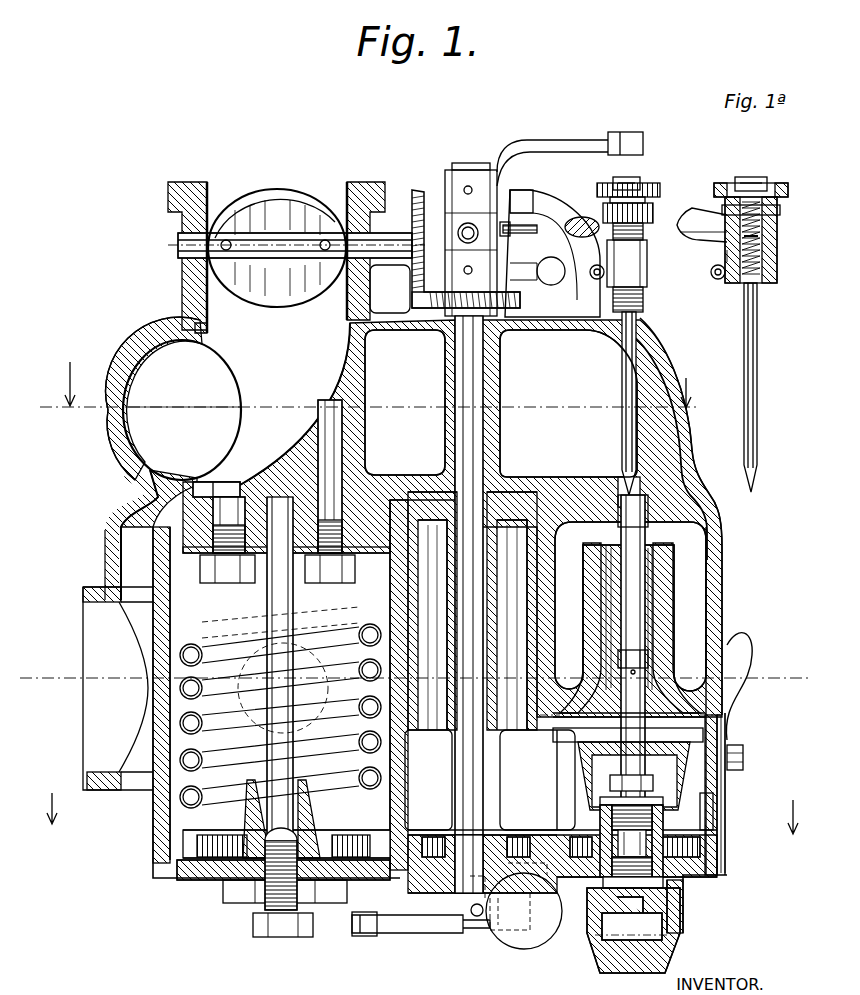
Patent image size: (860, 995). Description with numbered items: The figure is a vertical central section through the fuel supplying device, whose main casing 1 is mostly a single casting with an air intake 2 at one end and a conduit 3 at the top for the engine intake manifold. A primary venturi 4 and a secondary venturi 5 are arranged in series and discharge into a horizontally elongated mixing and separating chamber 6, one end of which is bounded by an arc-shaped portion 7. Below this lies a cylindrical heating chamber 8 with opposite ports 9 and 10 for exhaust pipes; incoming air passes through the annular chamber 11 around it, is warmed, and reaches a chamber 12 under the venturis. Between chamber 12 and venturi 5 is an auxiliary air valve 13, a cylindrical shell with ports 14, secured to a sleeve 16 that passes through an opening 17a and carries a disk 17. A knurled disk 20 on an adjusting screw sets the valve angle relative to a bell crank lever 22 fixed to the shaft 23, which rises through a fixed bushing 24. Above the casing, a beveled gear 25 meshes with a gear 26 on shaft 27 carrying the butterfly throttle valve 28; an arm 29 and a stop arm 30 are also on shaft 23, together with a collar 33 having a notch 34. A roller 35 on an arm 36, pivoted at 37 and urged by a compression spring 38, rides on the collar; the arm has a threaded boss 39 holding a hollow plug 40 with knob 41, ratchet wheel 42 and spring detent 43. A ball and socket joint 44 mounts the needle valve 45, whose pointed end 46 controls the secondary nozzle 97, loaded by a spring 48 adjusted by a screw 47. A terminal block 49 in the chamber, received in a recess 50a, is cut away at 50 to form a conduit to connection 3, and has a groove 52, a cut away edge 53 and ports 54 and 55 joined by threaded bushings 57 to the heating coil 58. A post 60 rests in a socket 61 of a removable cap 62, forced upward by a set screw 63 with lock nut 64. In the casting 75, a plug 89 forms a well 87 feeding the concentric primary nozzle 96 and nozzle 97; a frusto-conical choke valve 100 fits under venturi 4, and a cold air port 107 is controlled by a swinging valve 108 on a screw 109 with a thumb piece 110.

In FIG. 1, the main casing 1 is at (722, 604).
In FIG. 1, the air intake 2 is at (100, 632).
In FIG. 1, the conduit or connection 3 is at (212, 196).
In FIG. 1, the primary venturi 4 is at (648, 618).
In FIG. 1, the secondary venturi 5 is at (600, 482).
In FIG. 1, the mixing and separating chamber 6 is at (331, 401).
In FIG. 1, the arc-shaped portion 7 is at (182, 407).
In FIG. 1, the heating chamber 8 is at (150, 718).
In FIG. 1, the port 9 is at (694, 811).
In FIG. 1, the port 10 is at (414, 681).
In FIG. 1, the annular chamber 11 is at (140, 812).
In FIG. 1, the chamber 12 is at (582, 805).
In FIG. 1, the auxiliary air valve 13 is at (537, 780).
In FIG. 1, the ports 14 is at (545, 572).
In FIG. 1, the tubular shaft or sleeve 16 is at (458, 760).
In FIG. 1, the disk 17 is at (450, 790).
In FIG. 1, the opening 17a is at (598, 830).
In FIG. 1, the knurled disk 20 is at (522, 945).
In FIG. 1, the bell crank lever 22 is at (413, 940).
In FIG. 1, the shaft 23 is at (480, 365).
In FIG. 1, the fixed sleeve or bushing 24 is at (508, 407).
In FIG. 1, the beveled gear 25 is at (412, 298).
In FIG. 1, the beveled gear 26 is at (418, 190).
In FIG. 1, the shaft 27 is at (178, 250).
In FIG. 1, the butterfly throttle valve 28 is at (282, 200).
In FIG. 1, the lever or arm 29 is at (575, 140).
In FIG. 1, the stop arm 30 is at (551, 285).
In FIG. 1, the collar 33 is at (466, 214).
In FIG. 1, the notch or depression 34 is at (523, 235).
In FIG. 1, the roller 35 is at (537, 231).
In FIG. 1, the arm 36 is at (552, 195).
In FIG. 1A, the arm 36 is at (692, 208).
In FIG. 1, the pivot 37 is at (595, 280).
In FIG. 1A, the pivot 37 is at (718, 280).
In FIG. 1, the compression spring 38 is at (643, 300).
In FIG. 1, the hollow threaded boss 39 is at (647, 268).
In FIG. 1A, the hollow threaded boss 39 is at (777, 262).
In FIG. 1, the hollow plug 40 is at (645, 236).
In FIG. 1A, the hollow plug 40 is at (770, 238).
In FIG. 1, the knurled disk or knob 41 is at (640, 183).
In FIG. 1A, the knurled disk or knob 41 is at (778, 184).
In FIG. 1, the ratchet wheel 42 is at (655, 210).
In FIG. 1A, the ratchet wheel 42 is at (780, 212).
In FIG. 1, the spring detent 43 is at (590, 217).
In FIG. 1A, the spring detent 43 is at (695, 240).
In FIG. 1A, the ball and socket joint 44 is at (730, 262).
In FIG. 1, the needle valve 45 is at (622, 375).
In FIG. 1A, the needle valve 45 is at (758, 340).
In FIG. 1, the pointed end 46 is at (632, 488).
In FIG. 1, the screw 47 is at (624, 177).
In FIG. 1A, the screw 47 is at (752, 177).
In FIG. 1A, the compression spring 48 is at (775, 230).
In FIG. 1, the terminal block 49 is at (366, 377).
In FIG. 1, the cut away portion 50 is at (283, 387).
In FIG. 1, the recess 50a is at (405, 402).
In FIG. 1, the groove 52 is at (366, 467).
In FIG. 1, the cut away edge 53 is at (215, 488).
In FIG. 1, the port 54 is at (240, 482).
In FIG. 1, the port 55 is at (328, 400).
In FIG. 1, the threaded bushings 57 is at (200, 572).
In FIG. 1, the heating coil 58 is at (212, 610).
In FIG. 1, the post 60 is at (215, 605).
In FIG. 1, the socket 61 is at (250, 790).
In FIG. 1, the removable cap or cover 62 is at (195, 880).
In FIG. 1, the set screw 63 is at (287, 937).
In FIG. 1, the lock nut 64 is at (243, 903).
In FIG. 1, the casting 75 is at (703, 880).
In FIG. 1, the well 87 is at (605, 935).
In FIG. 1, the screw threaded plug 89 is at (682, 950).
In FIG. 1, the primary nozzle 96 is at (618, 662).
In FIG. 1, the secondary nozzle 97 is at (648, 530).
In FIG. 1, the choke valve 100 is at (578, 790).
In FIG. 1, the port 107 is at (728, 814).
In FIG. 1, the swinging valve 108 is at (727, 792).
In FIG. 1, the screw 109 is at (745, 755).
In FIG. 1, the thumb piece 110 is at (740, 650).